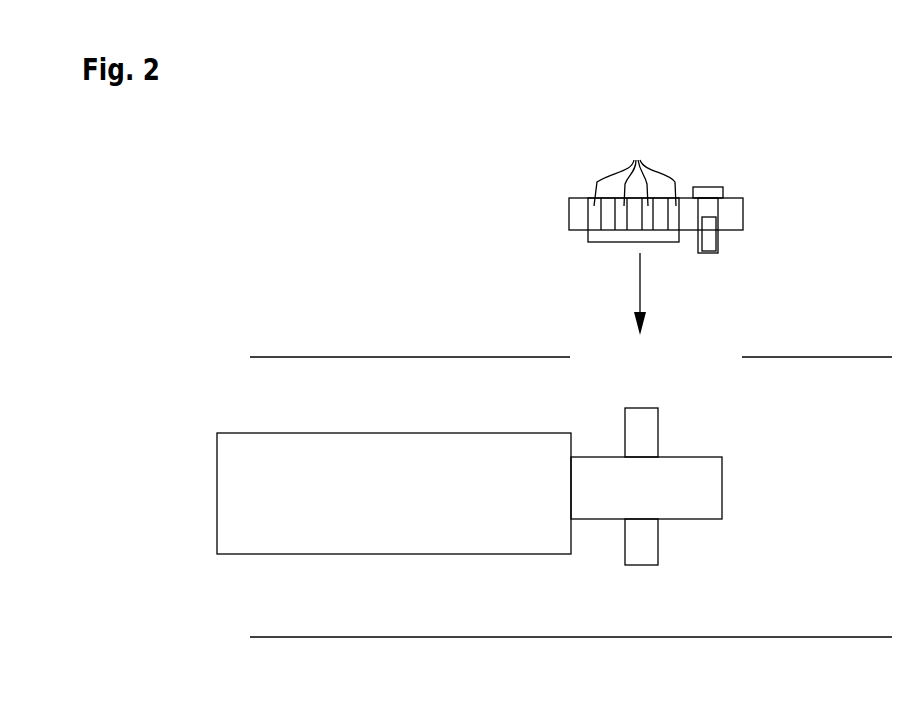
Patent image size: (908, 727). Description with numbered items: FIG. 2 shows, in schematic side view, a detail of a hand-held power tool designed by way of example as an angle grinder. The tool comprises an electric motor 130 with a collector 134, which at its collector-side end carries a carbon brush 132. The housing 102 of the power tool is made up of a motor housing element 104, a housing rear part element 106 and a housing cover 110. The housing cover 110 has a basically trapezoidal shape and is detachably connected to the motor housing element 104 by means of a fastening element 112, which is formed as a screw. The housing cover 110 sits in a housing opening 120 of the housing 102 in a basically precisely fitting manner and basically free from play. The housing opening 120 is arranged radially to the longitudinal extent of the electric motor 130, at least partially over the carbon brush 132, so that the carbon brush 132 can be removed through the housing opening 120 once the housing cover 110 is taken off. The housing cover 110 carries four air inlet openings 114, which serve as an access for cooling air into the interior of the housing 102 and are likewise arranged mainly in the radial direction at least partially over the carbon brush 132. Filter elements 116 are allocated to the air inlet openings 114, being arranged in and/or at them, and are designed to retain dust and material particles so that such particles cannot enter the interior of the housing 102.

The housing 102 is at (281, 294).
The motor housing element 104 is at (344, 356).
The housing rear part element 106 is at (850, 356).
The housing cover 110 is at (689, 229).
The fastening element 112 is at (711, 187).
The air inlet openings 114 is at (635, 168).
The filter elements 116 is at (606, 242).
The housing opening 120 is at (722, 368).
The electric motor 130 is at (410, 555).
The carbon brush 132 is at (640, 545).
The collector 134 is at (700, 500).